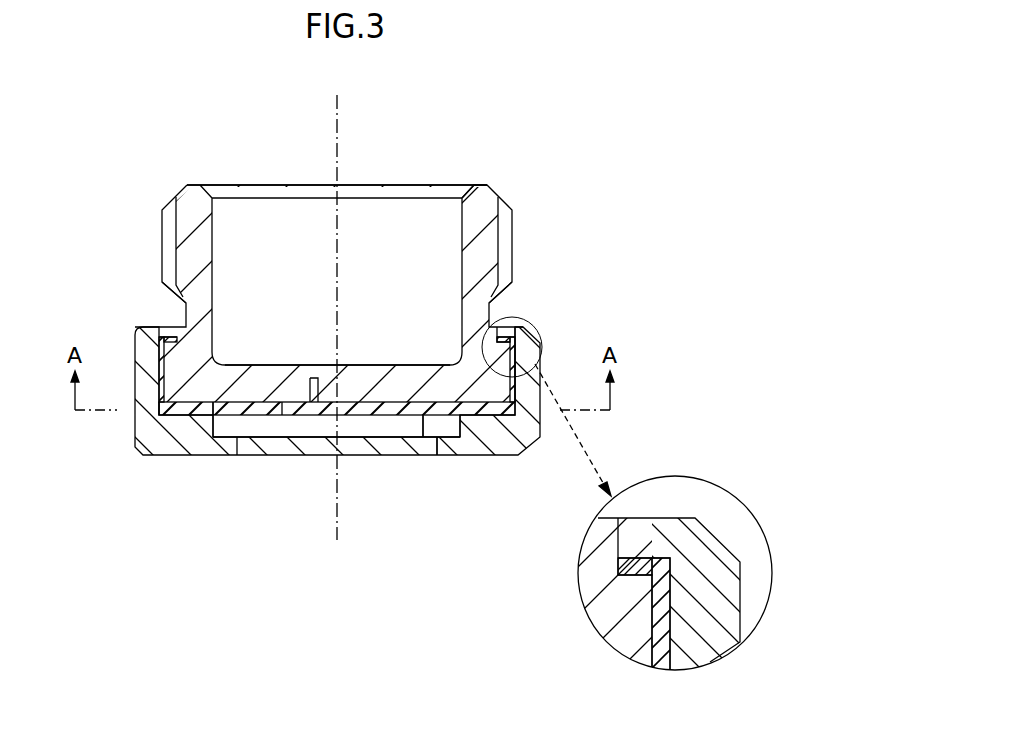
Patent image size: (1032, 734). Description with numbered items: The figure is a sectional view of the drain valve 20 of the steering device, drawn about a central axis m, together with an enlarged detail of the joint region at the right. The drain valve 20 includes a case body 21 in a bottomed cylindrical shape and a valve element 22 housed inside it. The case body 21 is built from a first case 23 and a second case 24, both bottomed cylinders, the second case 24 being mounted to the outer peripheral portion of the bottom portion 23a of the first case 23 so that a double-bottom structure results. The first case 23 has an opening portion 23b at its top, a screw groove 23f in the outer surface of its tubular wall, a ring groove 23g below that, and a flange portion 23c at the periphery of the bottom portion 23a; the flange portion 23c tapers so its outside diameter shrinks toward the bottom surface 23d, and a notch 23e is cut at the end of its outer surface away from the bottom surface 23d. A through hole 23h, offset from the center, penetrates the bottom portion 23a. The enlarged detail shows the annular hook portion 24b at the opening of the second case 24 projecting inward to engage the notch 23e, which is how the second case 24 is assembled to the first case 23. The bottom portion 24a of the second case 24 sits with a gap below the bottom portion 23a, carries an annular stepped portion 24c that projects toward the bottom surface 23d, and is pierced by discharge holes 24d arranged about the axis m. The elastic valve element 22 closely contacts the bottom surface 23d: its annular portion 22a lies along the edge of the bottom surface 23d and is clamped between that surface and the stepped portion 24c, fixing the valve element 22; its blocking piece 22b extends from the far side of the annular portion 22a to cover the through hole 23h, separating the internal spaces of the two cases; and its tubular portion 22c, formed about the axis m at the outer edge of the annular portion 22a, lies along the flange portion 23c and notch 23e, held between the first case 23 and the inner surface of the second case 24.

The drain valve 20 is at (519, 188).
The case body 21 is at (238, 184).
The valve element 22 is at (290, 413).
The annular portion 22a is at (194, 440).
The blocking piece 22b is at (290, 408).
The tubular portion 22c is at (155, 403).
The first case 23 is at (178, 197).
The bottom portion 23a is at (383, 365).
The opening portion 23b is at (457, 186).
The flange portion 23c is at (518, 331).
The bottom surface 23d is at (426, 416).
The notch 23e is at (590, 568).
The screw groove 23f is at (520, 233).
The ring groove 23g is at (500, 306).
The through hole 23h is at (313, 382).
The second case 24 is at (157, 340).
The bottom portion 24a is at (386, 440).
The hook portion 24b is at (640, 533).
The stepped portion 24c is at (458, 418).
The discharge holes 24d is at (397, 443).
The axis m is at (343, 118).